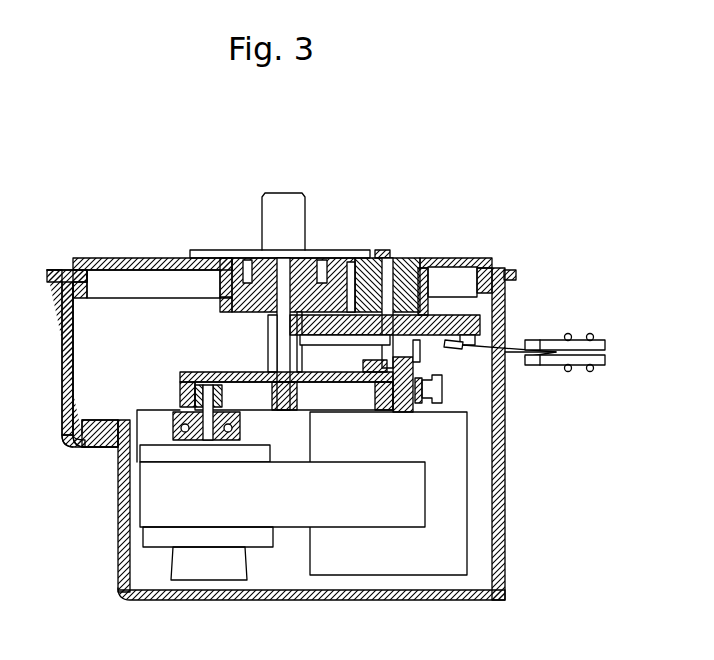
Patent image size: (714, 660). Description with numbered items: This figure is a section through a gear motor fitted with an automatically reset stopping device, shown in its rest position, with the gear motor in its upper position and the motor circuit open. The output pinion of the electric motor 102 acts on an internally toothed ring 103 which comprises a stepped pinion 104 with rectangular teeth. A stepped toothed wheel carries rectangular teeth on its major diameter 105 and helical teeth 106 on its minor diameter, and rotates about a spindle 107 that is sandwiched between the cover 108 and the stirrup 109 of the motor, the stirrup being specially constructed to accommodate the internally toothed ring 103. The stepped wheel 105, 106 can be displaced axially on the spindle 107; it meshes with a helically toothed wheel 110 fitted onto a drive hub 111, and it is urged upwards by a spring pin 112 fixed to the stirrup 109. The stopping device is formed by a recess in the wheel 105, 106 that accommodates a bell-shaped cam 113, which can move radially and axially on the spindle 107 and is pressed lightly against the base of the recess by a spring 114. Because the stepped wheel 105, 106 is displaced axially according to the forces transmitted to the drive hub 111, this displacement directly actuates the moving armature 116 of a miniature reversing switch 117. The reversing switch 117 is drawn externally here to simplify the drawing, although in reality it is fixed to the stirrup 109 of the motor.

The electric motor 102 is at (182, 400).
The internally toothed ring 103 is at (182, 372).
The stepped pinion 104 is at (258, 352).
The major diameter of stepped toothed wheel 105 is at (495, 325).
The helical teeth on minor diameter 106 is at (472, 265).
The spindle 107 is at (400, 270).
The cover 108 is at (123, 258).
The stirrup 109 is at (403, 410).
The helically toothed wheel 110 is at (213, 310).
The drive hub 111 is at (305, 210).
The spring pin 112 is at (418, 345).
The bell-shaped cam 113 is at (438, 290).
The spring 114 is at (375, 265).
The moving armature 116 is at (513, 357).
The miniature reversing switch 117 is at (597, 368).